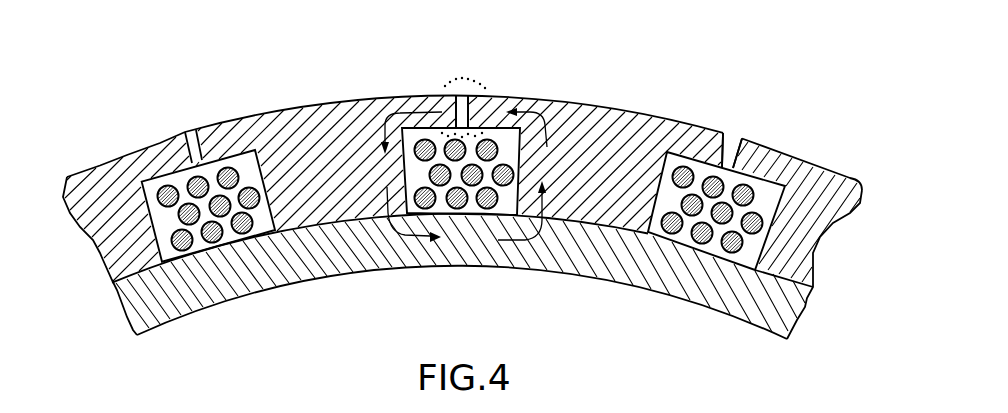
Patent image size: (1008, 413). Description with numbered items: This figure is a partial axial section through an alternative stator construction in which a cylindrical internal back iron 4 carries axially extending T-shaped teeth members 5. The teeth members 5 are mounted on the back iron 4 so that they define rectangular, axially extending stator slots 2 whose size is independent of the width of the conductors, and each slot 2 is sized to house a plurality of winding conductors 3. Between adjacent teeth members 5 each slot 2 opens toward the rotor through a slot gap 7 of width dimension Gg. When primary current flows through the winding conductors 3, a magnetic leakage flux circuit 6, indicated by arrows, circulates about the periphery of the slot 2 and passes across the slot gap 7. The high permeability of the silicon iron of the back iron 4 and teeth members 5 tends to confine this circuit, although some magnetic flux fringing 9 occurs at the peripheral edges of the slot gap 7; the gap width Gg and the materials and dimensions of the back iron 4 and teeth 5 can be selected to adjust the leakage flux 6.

The stator slot 2 is at (150, 237).
The winding conductors 3 is at (223, 240).
The back iron 4 is at (355, 262).
The T-shaped teeth members 5 is at (115, 170).
The magnetic leakage flux circuit 6 is at (418, 100).
The slot gap 7 is at (467, 90).
The magnetic flux fringing 9 is at (465, 80).
The slot gap width dimension Gg is at (137, 104).